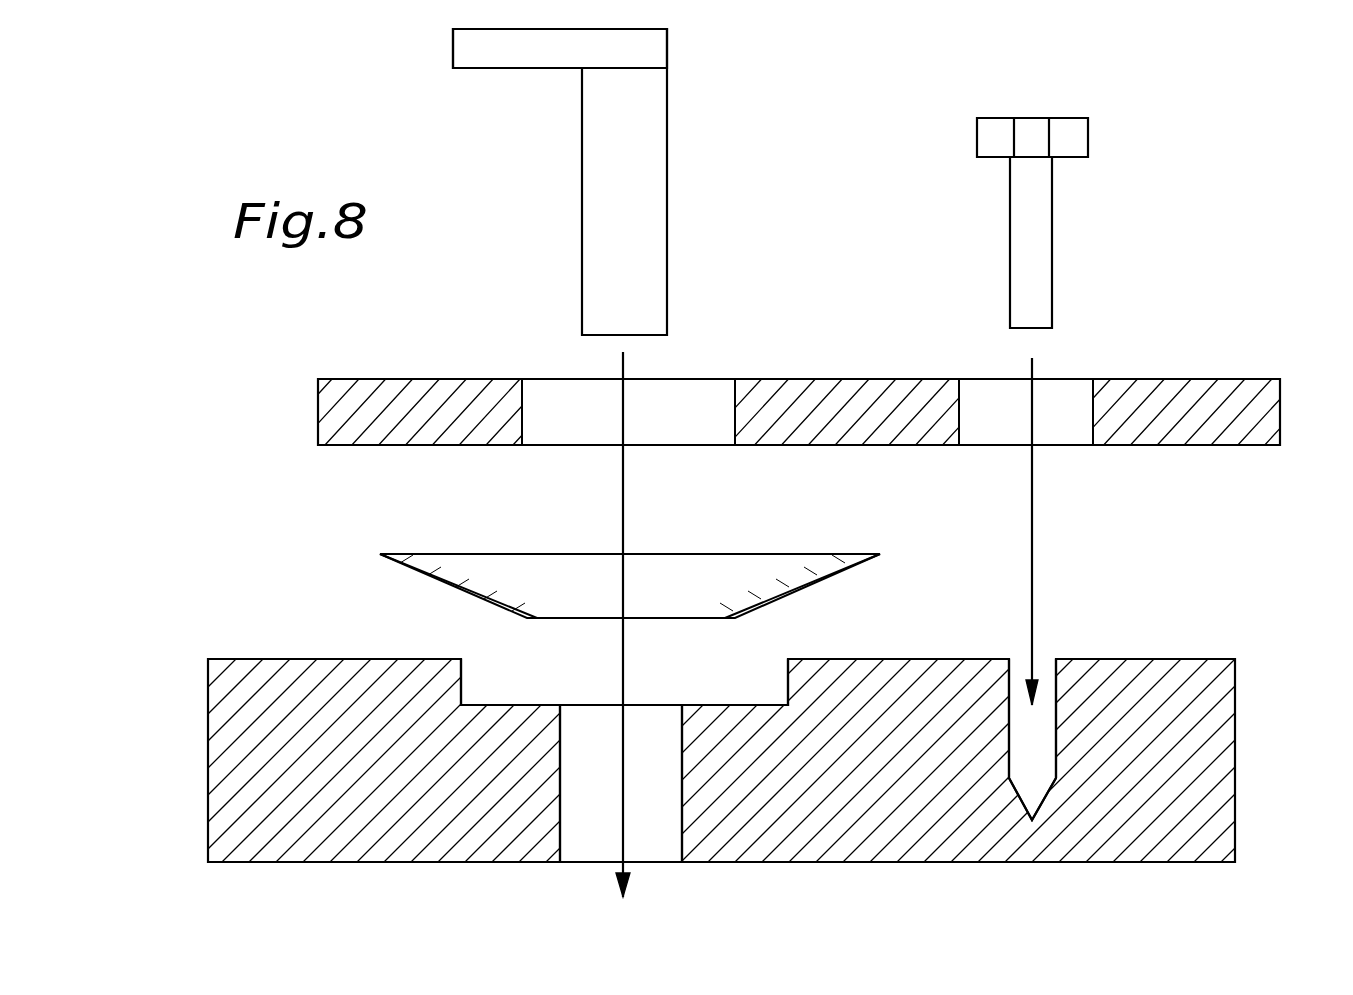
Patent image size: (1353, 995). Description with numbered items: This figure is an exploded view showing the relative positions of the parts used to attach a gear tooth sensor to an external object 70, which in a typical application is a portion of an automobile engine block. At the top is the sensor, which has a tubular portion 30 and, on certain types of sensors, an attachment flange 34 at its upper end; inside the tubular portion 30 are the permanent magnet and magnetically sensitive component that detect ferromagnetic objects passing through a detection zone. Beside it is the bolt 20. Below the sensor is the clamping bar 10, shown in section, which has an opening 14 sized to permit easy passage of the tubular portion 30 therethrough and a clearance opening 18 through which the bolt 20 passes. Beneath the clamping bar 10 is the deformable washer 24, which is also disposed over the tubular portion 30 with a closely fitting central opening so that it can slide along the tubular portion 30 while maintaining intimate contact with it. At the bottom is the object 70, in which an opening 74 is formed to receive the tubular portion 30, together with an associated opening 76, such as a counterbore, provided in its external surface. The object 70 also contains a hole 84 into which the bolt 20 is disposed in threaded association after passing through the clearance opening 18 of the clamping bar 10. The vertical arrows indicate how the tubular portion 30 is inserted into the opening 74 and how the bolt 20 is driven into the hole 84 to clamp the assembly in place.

The clamping bar 10 is at (318, 445).
The opening 14 is at (571, 437).
The clearance opening 18 is at (1000, 437).
The bolt 20 is at (1047, 263).
The deformable washer 24 is at (462, 568).
The tubular portion 30 is at (650, 220).
The attachment flange 34 is at (512, 60).
The object 70 is at (1222, 753).
The opening 74 is at (588, 848).
The associated opening 76 is at (773, 678).
The hole 84 is at (1047, 696).